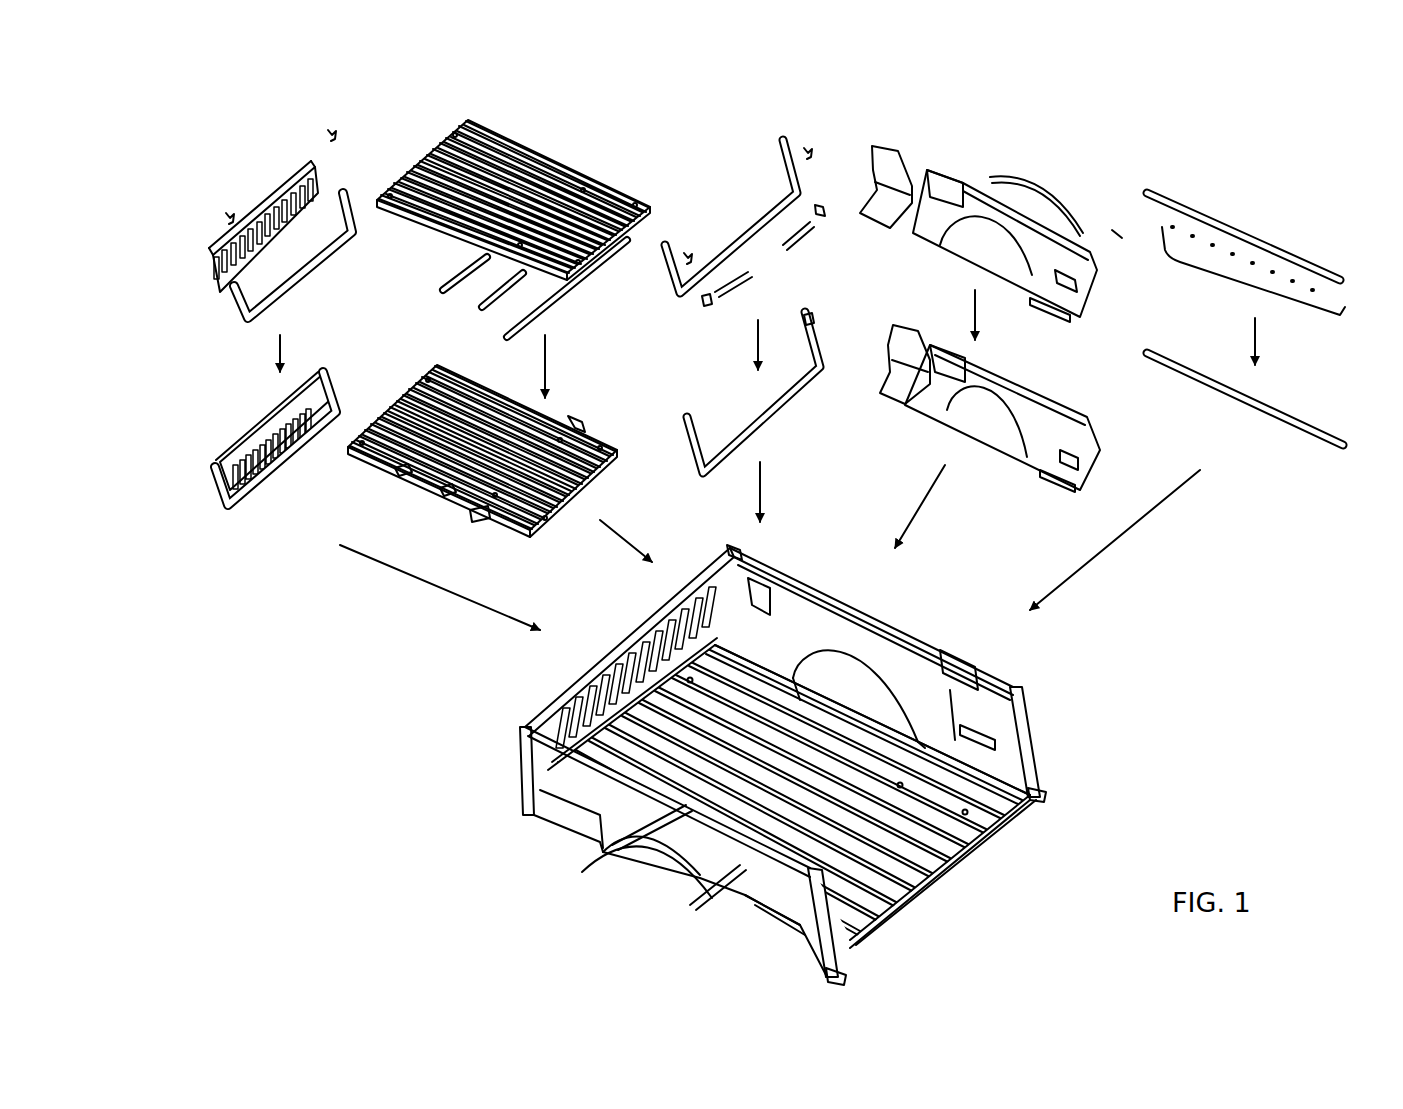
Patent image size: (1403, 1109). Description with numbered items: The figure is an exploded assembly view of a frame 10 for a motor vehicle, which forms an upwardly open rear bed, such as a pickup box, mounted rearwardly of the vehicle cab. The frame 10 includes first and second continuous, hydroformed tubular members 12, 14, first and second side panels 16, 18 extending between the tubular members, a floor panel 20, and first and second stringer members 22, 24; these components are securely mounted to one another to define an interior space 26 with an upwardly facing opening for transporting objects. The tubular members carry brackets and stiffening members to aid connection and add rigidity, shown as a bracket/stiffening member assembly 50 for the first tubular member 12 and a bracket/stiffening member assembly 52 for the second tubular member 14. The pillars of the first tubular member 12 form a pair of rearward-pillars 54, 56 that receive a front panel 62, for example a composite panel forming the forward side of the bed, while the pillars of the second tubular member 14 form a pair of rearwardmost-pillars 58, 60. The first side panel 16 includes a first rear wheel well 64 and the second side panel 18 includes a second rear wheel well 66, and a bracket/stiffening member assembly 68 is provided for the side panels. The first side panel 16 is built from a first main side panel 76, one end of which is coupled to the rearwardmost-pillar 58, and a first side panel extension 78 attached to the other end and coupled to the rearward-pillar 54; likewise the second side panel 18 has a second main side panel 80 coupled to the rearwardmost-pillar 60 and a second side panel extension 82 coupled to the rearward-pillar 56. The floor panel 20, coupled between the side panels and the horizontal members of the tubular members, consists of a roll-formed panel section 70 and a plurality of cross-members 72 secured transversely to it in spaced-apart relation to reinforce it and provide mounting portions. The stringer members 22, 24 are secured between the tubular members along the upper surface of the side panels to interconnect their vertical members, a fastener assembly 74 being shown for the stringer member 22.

The frame 10 is at (492, 718).
The first tubular member 12 is at (302, 270).
The second tubular member 14 is at (738, 230).
The first side panel 16 is at (1013, 150).
The second side panel 18 is at (760, 890).
The floor panel 20 is at (548, 135).
The first stringer member 22 is at (1250, 220).
The second stringer member 24 is at (670, 820).
The interior space 26 is at (990, 805).
The bracket/stiffening member assembly 50 is at (322, 130).
The bracket/stiffening member assembly 52 is at (812, 142).
The rearward-pillar 54 is at (735, 548).
The rearward-pillar 56 is at (520, 760).
The rearwardmost-pillar 58 is at (1030, 740).
The rearwardmost-pillar 60 is at (820, 930).
The front panel 62 is at (215, 262).
The first rear wheel well 64 is at (992, 435).
The second rear wheel well 66 is at (610, 850).
The bracket/stiffening member assembly 68 is at (1119, 225).
The panel section 70 is at (552, 190).
The cross-members 72 is at (440, 285).
The fastener assembly 74 is at (1250, 278).
The first main side panel 76 is at (943, 185).
The first side panel extension 78 is at (892, 165).
The second main side panel 80 is at (730, 868).
The second side panel extension 82 is at (555, 820).